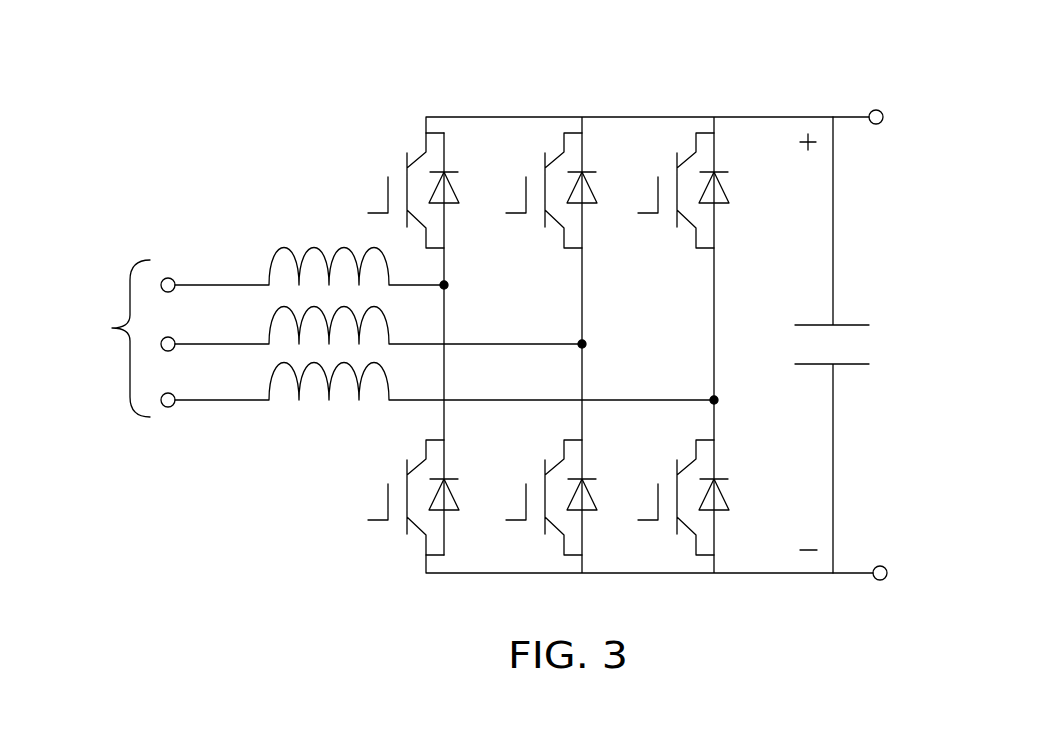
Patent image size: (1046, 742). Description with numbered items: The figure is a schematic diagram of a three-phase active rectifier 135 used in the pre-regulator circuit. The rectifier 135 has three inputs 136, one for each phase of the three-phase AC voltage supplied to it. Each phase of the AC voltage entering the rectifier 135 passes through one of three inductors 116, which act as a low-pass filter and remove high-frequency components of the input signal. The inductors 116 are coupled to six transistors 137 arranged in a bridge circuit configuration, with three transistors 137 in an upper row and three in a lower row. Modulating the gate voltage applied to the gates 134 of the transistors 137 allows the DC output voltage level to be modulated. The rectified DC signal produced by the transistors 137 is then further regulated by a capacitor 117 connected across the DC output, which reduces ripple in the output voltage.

The inductors 116 is at (321, 405).
The capacitor 117 is at (848, 313).
The gates 134 is at (497, 356).
The active rectifier 135 is at (358, 68).
The inputs 136 is at (115, 338).
The transistors 137 is at (362, 509).